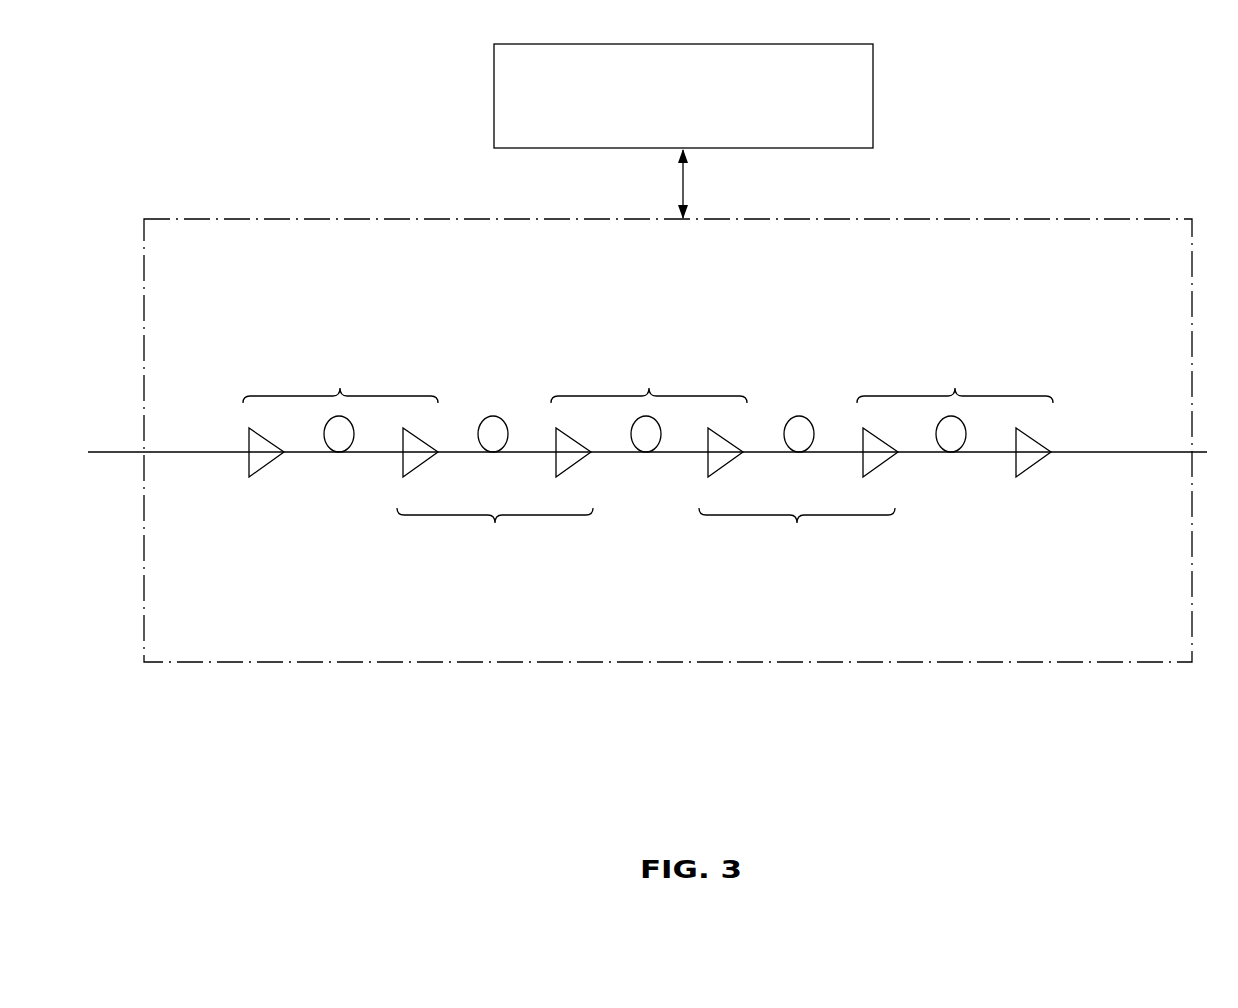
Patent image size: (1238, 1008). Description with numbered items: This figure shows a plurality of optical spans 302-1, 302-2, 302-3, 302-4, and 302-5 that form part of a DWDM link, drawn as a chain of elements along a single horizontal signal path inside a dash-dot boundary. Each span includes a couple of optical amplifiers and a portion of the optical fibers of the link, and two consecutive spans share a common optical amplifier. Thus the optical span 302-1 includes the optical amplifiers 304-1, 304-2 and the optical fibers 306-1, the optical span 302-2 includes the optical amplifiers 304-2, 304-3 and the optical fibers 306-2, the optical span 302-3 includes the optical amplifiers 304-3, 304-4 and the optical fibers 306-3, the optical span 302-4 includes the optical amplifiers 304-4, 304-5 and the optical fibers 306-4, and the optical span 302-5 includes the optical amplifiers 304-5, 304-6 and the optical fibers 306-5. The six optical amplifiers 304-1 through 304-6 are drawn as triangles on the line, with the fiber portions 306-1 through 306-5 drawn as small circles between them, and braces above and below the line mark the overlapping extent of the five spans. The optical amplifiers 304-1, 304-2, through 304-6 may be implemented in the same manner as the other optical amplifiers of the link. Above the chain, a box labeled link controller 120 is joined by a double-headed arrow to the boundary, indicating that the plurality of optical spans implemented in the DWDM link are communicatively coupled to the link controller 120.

The link controller 120 is at (707, 133).
The optical span 302-1 is at (340, 377).
The optical span 302-2 is at (495, 533).
The optical span 302-3 is at (649, 377).
The optical span 302-4 is at (797, 533).
The optical span 302-5 is at (955, 377).
The optical amplifier 304-1 is at (270, 473).
The optical amplifier 304-2 is at (432, 440).
The optical amplifier 304-3 is at (580, 465).
The optical amplifier 304-4 is at (740, 437).
The optical amplifier 304-5 is at (888, 465).
The optical amplifier 304-6 is at (1043, 438).
The optical fibers 306-1 is at (337, 455).
The optical fibers 306-2 is at (507, 423).
The optical fibers 306-3 is at (645, 455).
The optical fibers 306-4 is at (817, 418).
The optical fibers 306-5 is at (952, 455).